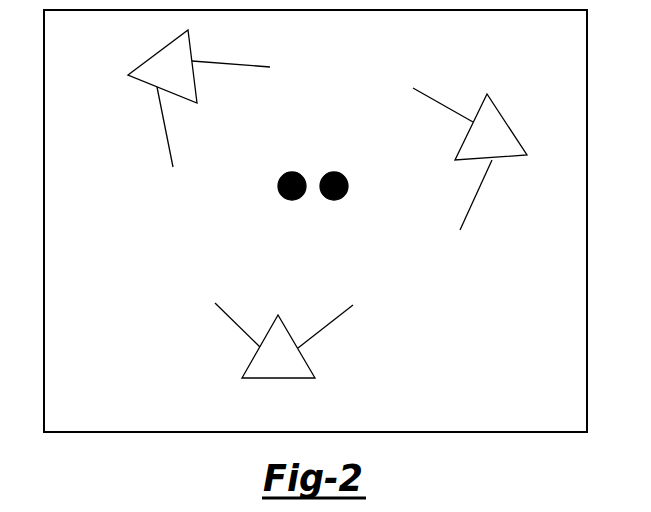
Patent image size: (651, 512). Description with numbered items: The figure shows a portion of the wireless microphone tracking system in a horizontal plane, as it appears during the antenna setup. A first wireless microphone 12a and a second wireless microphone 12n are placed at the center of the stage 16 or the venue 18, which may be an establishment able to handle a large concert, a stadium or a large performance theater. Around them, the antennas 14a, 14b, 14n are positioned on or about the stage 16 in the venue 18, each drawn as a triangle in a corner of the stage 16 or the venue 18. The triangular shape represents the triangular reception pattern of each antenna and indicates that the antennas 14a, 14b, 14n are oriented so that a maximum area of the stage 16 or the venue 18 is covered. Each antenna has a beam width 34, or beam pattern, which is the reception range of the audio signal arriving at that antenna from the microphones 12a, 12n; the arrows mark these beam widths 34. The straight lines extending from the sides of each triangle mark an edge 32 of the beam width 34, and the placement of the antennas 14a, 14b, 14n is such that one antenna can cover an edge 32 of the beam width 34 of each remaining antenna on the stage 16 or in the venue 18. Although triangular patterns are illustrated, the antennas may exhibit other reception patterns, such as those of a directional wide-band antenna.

The antenna 14a is at (160, 50).
The antenna 14b is at (277, 380).
The antenna 14n is at (510, 125).
The edge of beam width 32 is at (230, 62).
The beam width 34 is at (231, 117).
The first wireless microphone 12a is at (278, 186).
The second wireless microphone 12n is at (348, 186).
The stage 16 is at (495, 304).
The venue 18 is at (537, 304).